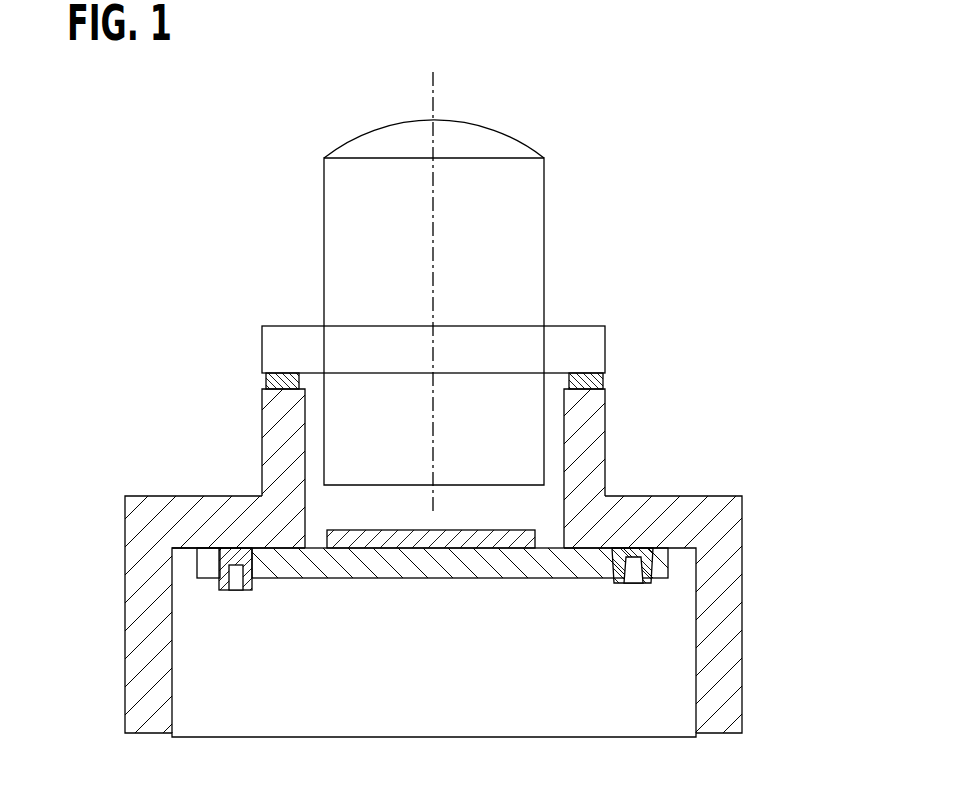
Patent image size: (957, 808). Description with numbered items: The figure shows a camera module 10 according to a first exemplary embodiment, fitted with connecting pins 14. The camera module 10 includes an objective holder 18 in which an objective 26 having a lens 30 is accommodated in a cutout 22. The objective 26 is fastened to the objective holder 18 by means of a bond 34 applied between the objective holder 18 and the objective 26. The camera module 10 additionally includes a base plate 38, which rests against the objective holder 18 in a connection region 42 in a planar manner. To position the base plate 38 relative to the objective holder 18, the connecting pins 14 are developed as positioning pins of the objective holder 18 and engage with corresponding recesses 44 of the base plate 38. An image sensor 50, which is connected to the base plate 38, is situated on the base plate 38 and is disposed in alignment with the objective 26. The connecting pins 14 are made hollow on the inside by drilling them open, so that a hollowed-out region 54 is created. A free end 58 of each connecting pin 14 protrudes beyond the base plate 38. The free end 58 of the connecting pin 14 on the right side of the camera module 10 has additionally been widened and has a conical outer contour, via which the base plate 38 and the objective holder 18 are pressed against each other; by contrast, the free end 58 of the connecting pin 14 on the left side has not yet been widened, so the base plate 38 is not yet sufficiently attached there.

The camera module 10 is at (411, 387).
The connecting pins 14 is at (634, 586).
The objective holder 18 is at (691, 506).
The cutout 22 is at (300, 436).
The objective 26 is at (472, 261).
The lens 30 is at (483, 137).
The bond 34 is at (267, 383).
The base plate 38 is at (537, 568).
The connection region 42 is at (262, 547).
The recesses 44 is at (226, 552).
The image sensor 50 is at (463, 542).
The hollowed-out region 54 is at (253, 615).
The free end 58 is at (254, 586).